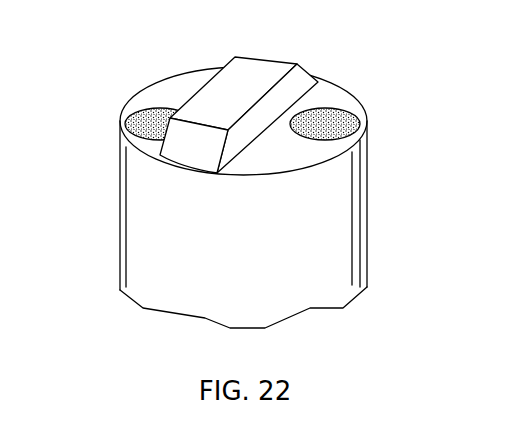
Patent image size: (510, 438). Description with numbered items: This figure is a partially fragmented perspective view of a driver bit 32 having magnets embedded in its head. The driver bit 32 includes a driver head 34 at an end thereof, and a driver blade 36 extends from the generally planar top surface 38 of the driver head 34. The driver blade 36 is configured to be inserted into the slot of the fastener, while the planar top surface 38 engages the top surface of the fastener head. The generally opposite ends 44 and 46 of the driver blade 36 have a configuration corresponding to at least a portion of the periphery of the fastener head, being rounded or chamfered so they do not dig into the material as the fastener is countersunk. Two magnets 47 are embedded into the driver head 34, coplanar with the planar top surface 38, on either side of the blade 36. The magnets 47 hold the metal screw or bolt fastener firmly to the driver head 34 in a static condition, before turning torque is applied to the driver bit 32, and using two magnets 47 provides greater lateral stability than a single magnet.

The driver bit 32 is at (98, 153).
The driver head 34 is at (122, 268).
The driver blade 36 is at (201, 90).
The top surface 38 is at (312, 145).
The end of the driver blade 44 is at (182, 147).
The end of the driver blade 46 is at (272, 56).
The magnets 47 is at (142, 120).